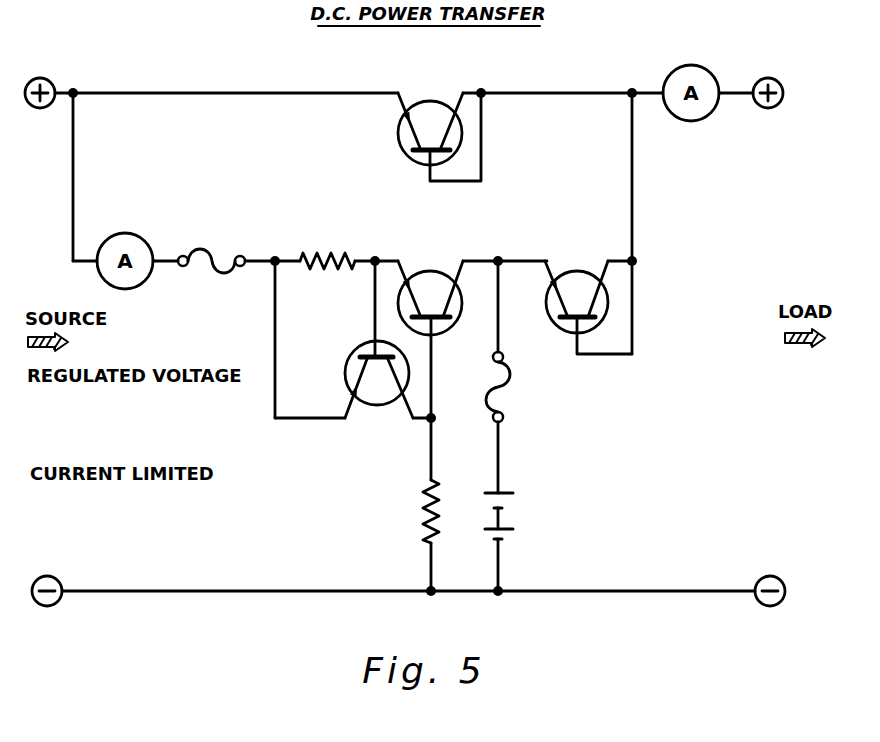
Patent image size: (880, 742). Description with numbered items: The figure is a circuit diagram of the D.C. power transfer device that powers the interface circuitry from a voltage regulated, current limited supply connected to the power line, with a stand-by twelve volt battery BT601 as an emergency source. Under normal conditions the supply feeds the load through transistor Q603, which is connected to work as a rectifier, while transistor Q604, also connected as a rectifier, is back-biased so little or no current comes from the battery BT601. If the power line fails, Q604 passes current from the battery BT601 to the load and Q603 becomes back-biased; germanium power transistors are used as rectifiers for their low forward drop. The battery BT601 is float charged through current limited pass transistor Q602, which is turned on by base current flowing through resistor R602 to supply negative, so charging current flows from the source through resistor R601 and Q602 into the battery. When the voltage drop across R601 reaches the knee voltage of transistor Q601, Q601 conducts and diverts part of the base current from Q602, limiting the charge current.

The transistor Q601 is at (379, 392).
The current limited pass transistor Q602 is at (430, 287).
The transistor connected as a rectifier Q603 is at (439, 126).
The transistor connected as a rectifier Q604 is at (588, 297).
The resistor R601 is at (327, 249).
The resistor R602 is at (404, 511).
The battery BT601 is at (564, 521).